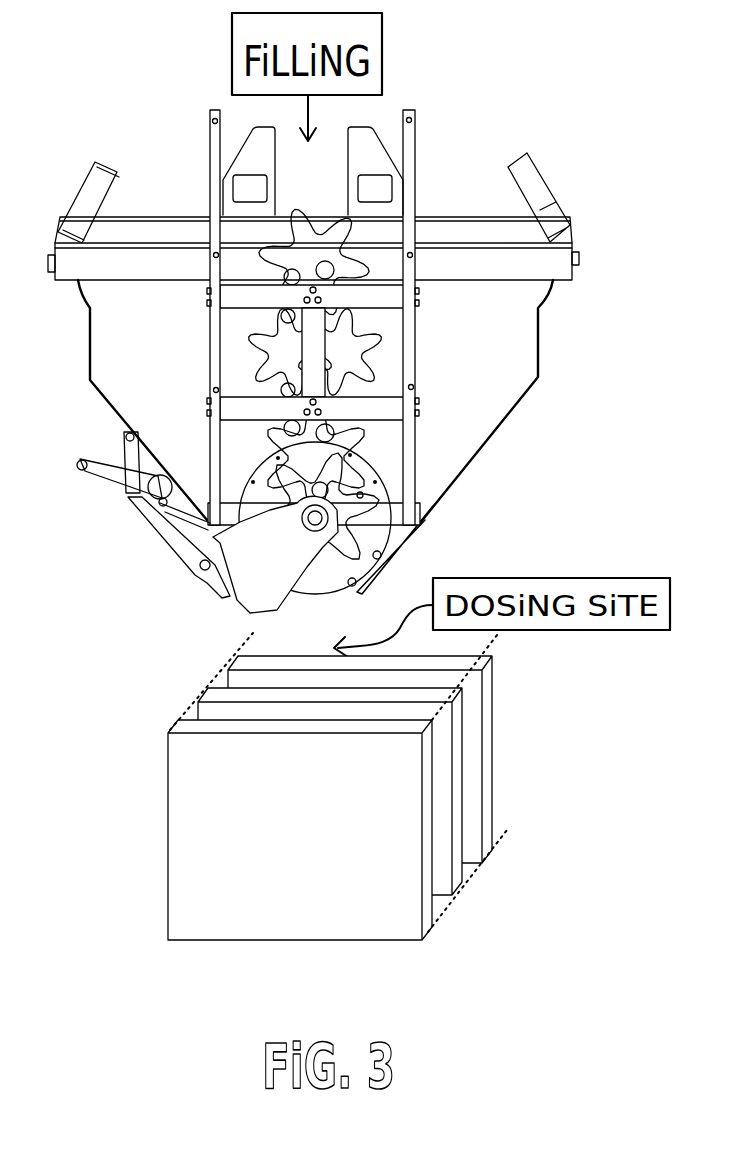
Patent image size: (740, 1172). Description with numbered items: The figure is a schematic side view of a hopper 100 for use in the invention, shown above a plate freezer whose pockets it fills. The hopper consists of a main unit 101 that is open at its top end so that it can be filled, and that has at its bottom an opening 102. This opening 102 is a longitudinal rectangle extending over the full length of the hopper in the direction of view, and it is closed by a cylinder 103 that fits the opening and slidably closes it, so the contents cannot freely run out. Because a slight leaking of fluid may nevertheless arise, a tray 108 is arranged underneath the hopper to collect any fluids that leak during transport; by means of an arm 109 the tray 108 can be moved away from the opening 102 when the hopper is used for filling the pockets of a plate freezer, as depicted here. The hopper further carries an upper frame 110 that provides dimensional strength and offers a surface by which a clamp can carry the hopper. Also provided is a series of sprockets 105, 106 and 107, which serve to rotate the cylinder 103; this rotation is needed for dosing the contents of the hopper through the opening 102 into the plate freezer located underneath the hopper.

The hopper 100 is at (140, 111).
The main unit 101 is at (480, 448).
The opening 102 is at (330, 598).
The cylinder 103 is at (400, 547).
The sprocket 105 is at (362, 320).
The sprocket 106 is at (357, 370).
The sprocket 107 is at (380, 446).
The tray 108 is at (262, 612).
The arm 109 is at (155, 533).
The upper frame 110 is at (564, 281).